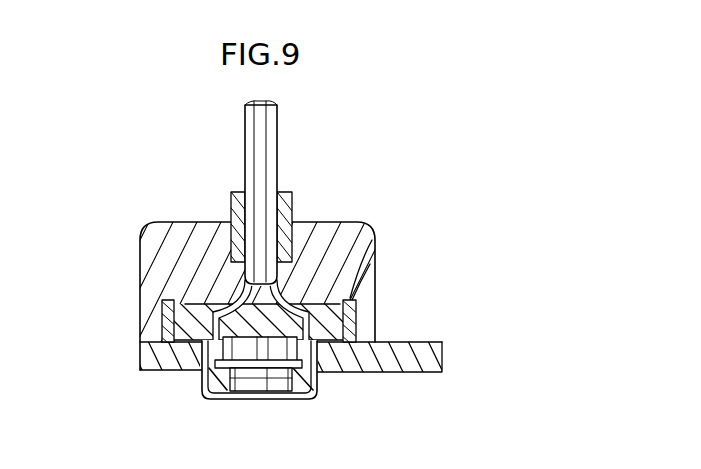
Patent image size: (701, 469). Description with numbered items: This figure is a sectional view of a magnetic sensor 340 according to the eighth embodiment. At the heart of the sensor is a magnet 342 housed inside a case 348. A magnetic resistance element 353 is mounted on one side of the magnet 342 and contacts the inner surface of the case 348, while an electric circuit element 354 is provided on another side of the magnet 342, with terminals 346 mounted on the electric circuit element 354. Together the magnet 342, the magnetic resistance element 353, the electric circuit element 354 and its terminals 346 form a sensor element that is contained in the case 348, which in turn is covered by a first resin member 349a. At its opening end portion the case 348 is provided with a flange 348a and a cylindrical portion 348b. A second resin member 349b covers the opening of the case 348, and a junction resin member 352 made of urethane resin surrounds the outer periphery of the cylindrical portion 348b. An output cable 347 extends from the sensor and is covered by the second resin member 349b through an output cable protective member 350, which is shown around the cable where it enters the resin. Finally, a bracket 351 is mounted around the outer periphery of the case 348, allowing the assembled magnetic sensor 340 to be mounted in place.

The magnetic sensor 340 is at (411, 194).
The magnet 342 is at (245, 372).
The terminals 346 is at (160, 331).
The output cable 347 is at (279, 134).
The case 348 is at (318, 393).
The flange 348a is at (317, 366).
The cylindrical portion 348b is at (352, 262).
The first resin member 349a is at (152, 313).
The second resin member 349b is at (366, 250).
The output cable protective member 350 is at (292, 197).
The bracket 351 is at (432, 342).
The junction resin member 352 is at (357, 298).
The magnetic resistance element 353 is at (283, 372).
The electric circuit element 354 is at (215, 352).